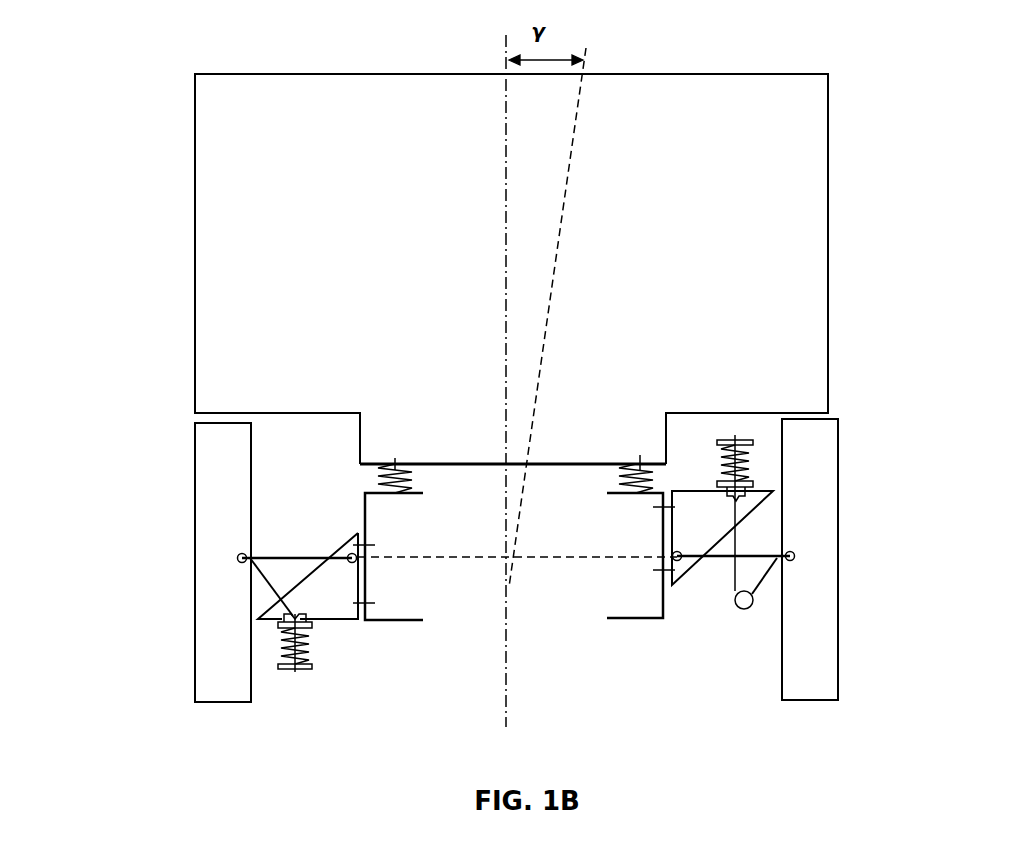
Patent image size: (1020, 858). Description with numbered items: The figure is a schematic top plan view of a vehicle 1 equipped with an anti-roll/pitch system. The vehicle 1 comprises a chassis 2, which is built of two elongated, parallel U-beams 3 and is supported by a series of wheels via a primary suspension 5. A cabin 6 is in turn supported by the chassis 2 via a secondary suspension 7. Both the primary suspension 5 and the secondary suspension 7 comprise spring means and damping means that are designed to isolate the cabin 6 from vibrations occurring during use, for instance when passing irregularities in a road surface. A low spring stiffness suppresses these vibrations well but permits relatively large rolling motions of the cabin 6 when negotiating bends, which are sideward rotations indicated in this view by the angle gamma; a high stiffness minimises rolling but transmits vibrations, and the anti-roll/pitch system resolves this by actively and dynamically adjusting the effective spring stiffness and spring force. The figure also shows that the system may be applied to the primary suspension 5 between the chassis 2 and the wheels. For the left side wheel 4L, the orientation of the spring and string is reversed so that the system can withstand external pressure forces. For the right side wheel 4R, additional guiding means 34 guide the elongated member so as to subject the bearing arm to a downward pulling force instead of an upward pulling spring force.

The vehicle 1 is at (150, 74).
The chassis 2 is at (488, 634).
The U-beams 3 is at (397, 620).
The left side wheel 4L is at (221, 683).
The right side wheel 4R is at (802, 668).
The primary suspension 5 is at (328, 668).
The cabin 6 is at (243, 221).
The secondary suspension 7 is at (513, 450).
The guiding means 34 is at (743, 609).